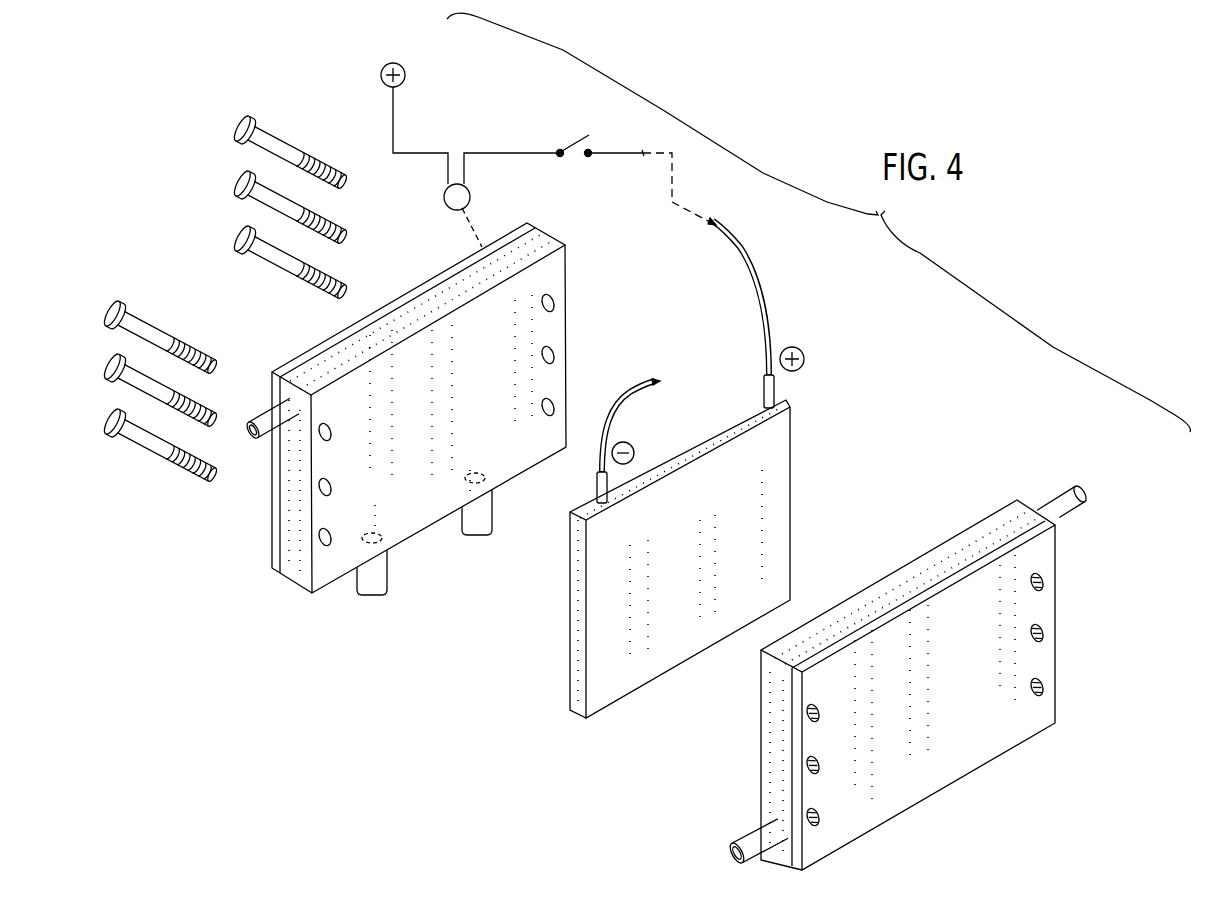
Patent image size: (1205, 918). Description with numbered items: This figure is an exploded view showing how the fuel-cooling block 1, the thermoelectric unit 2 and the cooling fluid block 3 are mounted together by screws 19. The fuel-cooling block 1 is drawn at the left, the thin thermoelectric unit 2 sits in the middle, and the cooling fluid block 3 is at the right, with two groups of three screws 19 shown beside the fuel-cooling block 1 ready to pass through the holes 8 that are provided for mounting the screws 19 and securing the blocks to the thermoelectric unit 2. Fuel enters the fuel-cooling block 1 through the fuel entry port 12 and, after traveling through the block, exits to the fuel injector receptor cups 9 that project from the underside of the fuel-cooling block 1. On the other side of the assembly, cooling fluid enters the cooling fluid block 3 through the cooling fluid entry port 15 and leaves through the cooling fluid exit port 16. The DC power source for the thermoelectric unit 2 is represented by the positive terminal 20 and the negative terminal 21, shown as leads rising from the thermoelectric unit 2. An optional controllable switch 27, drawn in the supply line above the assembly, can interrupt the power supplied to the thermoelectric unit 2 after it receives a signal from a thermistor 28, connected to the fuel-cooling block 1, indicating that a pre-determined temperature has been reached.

The fuel-cooling block 1 is at (397, 449).
The thermoelectric unit 2 is at (655, 459).
The cooling fluid block 3 is at (904, 664).
The holes 8 is at (556, 302).
The fuel injector receptor cups 9 is at (372, 597).
The fuel entry port 12 is at (263, 417).
The cooling fluid entry port 15 is at (727, 857).
The cooling fluid exit port 16 is at (1085, 497).
The screws 19 is at (237, 128).
The positive terminal 20 is at (722, 230).
The negative terminal 21 is at (640, 387).
The controllable switch 27 is at (579, 139).
The thermistor 28 is at (471, 196).